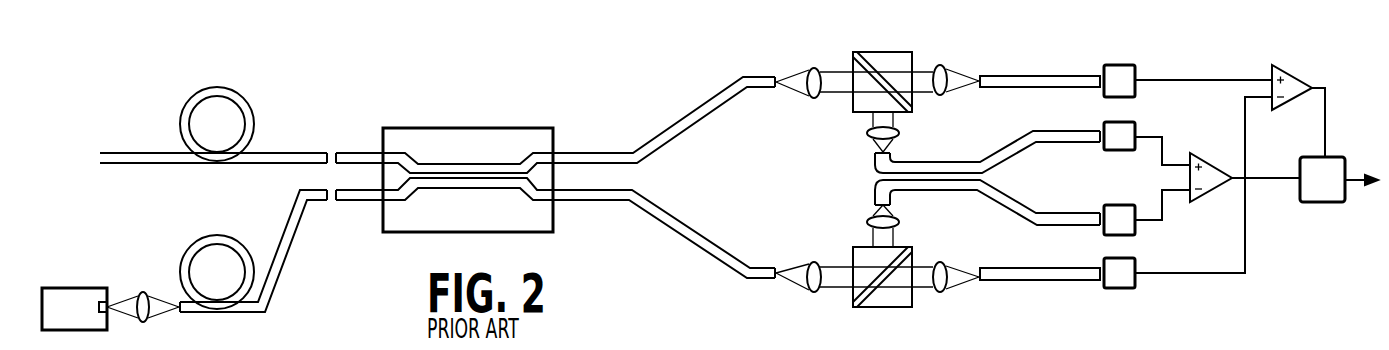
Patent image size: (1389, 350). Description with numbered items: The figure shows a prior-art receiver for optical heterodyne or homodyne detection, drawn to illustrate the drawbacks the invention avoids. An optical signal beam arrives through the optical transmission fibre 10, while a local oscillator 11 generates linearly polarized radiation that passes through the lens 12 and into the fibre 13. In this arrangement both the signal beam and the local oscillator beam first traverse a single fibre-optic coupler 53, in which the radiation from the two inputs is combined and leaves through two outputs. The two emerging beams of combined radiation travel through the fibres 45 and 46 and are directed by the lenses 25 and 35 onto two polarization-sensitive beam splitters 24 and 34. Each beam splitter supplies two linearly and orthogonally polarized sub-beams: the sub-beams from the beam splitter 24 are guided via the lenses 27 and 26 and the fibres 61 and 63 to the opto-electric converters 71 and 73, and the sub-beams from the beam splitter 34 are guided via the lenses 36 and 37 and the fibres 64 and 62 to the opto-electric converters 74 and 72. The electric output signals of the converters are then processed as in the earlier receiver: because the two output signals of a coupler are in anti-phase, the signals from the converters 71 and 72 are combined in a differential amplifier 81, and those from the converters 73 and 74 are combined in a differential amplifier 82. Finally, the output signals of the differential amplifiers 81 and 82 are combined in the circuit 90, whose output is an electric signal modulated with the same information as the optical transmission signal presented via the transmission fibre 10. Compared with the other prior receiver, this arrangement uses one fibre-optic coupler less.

The optical transmission fibre 10 is at (222, 160).
The local oscillator 11 is at (62, 298).
The lens 12 is at (143, 290).
The fibre 13 is at (231, 307).
The polarization-sensitive beam splitter 24 is at (887, 57).
The lens 25 is at (812, 68).
The lens 26 is at (866, 135).
The lens 27 is at (941, 63).
The polarization-sensitive beam splitter 34 is at (893, 303).
The lens 35 is at (813, 293).
The lens 36 is at (866, 220).
The lens 37 is at (941, 293).
The fibre 45 is at (678, 122).
The fibre 46 is at (667, 222).
The fibre-optic coupler 53 is at (458, 136).
The fibre 61 is at (1032, 77).
The fibre 62 is at (1035, 279).
The fibre 63 is at (1003, 156).
The fibre 64 is at (1000, 197).
The opto-electric converter 71 is at (1117, 73).
The opto-electric converter 72 is at (1117, 289).
The opto-electric converter 73 is at (1125, 128).
The opto-electric converter 74 is at (1132, 226).
The differential amplifier 81 is at (1297, 85).
The differential amplifier 82 is at (1216, 166).
The circuit 90 is at (1325, 201).